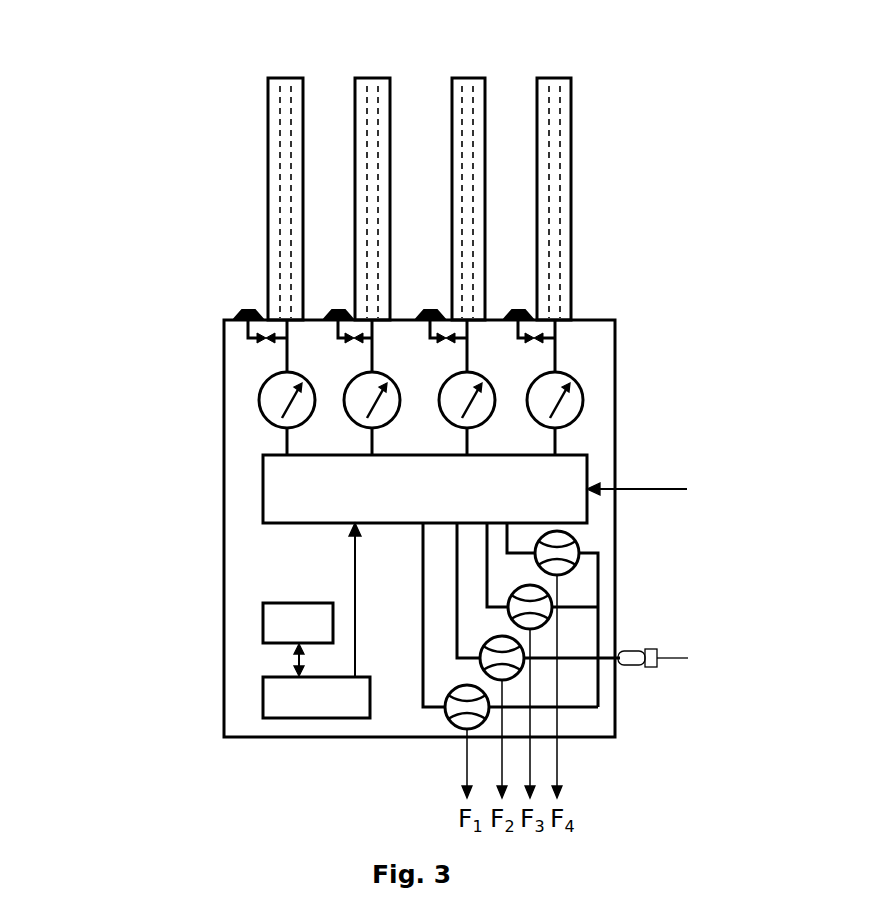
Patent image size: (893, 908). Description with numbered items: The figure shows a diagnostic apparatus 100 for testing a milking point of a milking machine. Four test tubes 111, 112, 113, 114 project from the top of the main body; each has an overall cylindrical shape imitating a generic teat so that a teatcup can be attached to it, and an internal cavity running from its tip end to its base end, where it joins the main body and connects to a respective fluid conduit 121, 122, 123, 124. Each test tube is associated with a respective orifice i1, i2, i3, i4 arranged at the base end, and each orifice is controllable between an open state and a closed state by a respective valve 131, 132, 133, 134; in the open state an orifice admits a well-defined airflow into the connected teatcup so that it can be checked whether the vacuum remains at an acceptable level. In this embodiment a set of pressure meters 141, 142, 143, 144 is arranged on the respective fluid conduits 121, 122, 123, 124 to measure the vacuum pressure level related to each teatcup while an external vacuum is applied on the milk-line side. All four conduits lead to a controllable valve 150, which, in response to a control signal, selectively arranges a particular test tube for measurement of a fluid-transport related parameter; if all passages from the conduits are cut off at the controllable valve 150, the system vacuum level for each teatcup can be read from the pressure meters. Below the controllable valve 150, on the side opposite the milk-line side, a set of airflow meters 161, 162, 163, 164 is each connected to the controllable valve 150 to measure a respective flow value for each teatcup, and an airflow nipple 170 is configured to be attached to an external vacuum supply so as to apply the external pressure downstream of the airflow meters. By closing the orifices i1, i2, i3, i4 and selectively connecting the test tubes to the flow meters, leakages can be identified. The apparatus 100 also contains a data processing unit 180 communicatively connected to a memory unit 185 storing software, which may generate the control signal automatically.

The diagnostic apparatus 100 is at (120, 742).
The test tube 111 is at (218, 199).
The test tube 112 is at (321, 168).
The test tube 113 is at (532, 172).
The test tube 114 is at (616, 199).
The fluid conduit 121 is at (196, 387).
The fluid conduit 122 is at (238, 392).
The fluid conduit 123 is at (596, 387).
The fluid conduit 124 is at (633, 382).
The valve 131 is at (187, 310).
The valve 132 is at (239, 271).
The valve 133 is at (553, 275).
The valve 134 is at (614, 309).
The pressure meter 141 is at (210, 393).
The pressure meter 142 is at (246, 369).
The pressure meter 143 is at (569, 392).
The pressure meter 144 is at (609, 409).
The controllable valve 150 is at (498, 566).
The airflow meter 161 is at (484, 661).
The airflow meter 162 is at (575, 661).
The airflow meter 163 is at (611, 660).
The airflow meter 164 is at (625, 656).
The airflow nipple 170 is at (685, 707).
The data processing unit 180 is at (271, 748).
The memory unit 185 is at (207, 639).
The orifice i1 is at (197, 290).
The orifice i2 is at (242, 235).
The orifice i3 is at (541, 256).
The orifice i4 is at (591, 289).